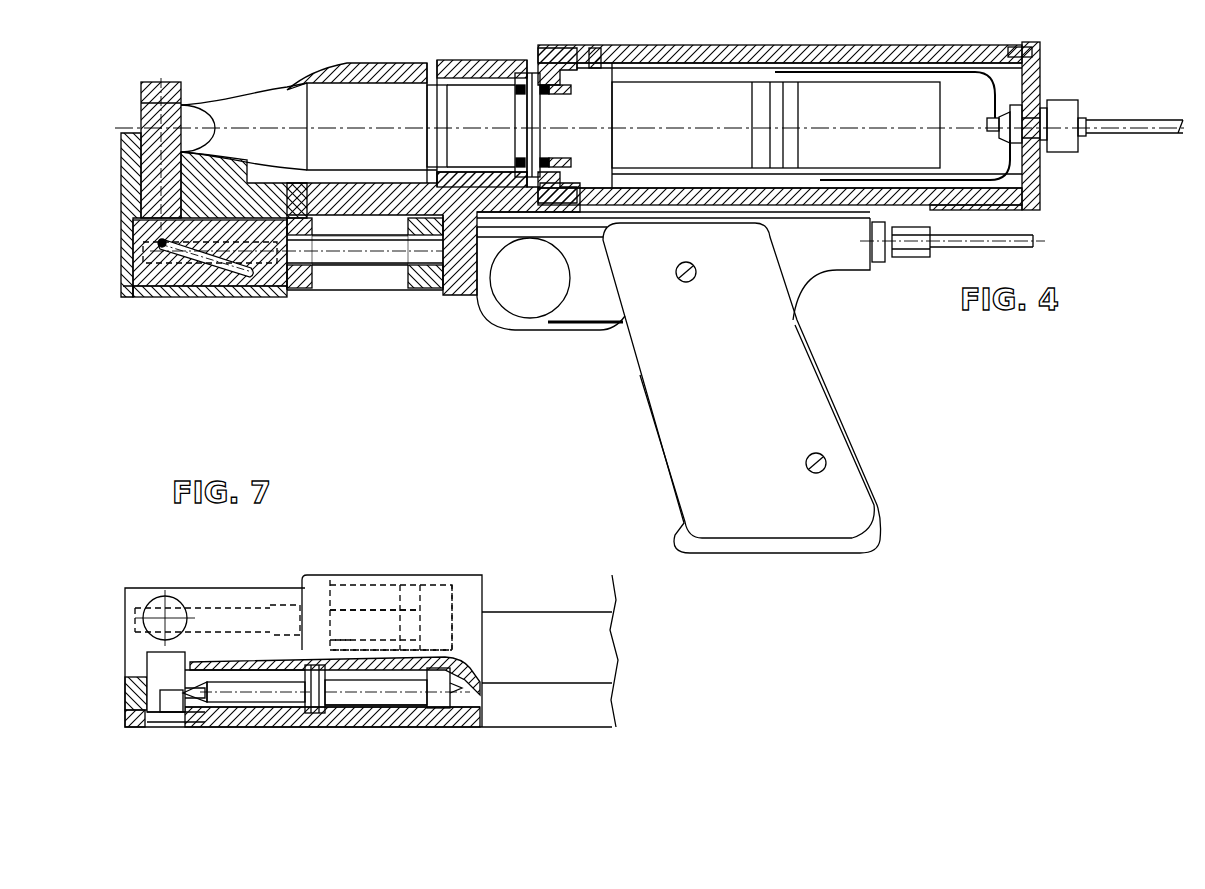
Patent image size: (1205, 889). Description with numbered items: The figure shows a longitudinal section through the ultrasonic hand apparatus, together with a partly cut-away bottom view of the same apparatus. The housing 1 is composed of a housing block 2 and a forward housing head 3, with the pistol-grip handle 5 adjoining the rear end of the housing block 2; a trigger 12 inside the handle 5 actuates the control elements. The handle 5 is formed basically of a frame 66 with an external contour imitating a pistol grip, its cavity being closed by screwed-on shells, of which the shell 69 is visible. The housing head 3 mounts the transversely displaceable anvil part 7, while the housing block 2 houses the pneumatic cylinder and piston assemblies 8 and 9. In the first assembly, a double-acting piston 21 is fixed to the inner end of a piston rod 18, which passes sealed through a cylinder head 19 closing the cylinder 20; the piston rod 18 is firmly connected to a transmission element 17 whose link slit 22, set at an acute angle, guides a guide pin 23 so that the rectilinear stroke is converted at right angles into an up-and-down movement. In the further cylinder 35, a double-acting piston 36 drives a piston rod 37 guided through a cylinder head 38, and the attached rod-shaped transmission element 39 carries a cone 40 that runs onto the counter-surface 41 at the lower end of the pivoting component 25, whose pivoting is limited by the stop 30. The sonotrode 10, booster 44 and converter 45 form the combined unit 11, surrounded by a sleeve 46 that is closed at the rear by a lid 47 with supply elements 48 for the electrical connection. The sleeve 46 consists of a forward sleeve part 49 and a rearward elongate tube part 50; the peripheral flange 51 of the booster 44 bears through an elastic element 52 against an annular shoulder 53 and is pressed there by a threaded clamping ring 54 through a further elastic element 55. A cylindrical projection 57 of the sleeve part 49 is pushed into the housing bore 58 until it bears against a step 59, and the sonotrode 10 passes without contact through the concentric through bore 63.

In FIG. 4, the housing 1 is at (372, 297).
In FIG. 7, the housing 1 is at (312, 572).
In FIG. 4, the housing block 2 is at (465, 300).
In FIG. 7, the housing block 2 is at (440, 575).
In FIG. 4, the housing head 3 is at (121, 199).
In FIG. 7, the housing head 3 is at (248, 588).
In FIG. 4, the handle 5 is at (838, 395).
In FIG. 4, the anvil part 7 is at (158, 82).
In FIG. 4, the pneumatic cylinder and piston assembly 8 is at (388, 282).
In FIG. 7, the pneumatic cylinder and piston assembly 8 is at (400, 570).
In FIG. 7, the pneumatic cylinder and piston assembly 9 is at (400, 708).
In FIG. 4, the sonotrode 10 is at (232, 106).
In FIG. 4, the combined unit 11 is at (682, 70).
In FIG. 4, the trigger 12 is at (575, 272).
In FIG. 4, the transmission element 17 is at (125, 276).
In FIG. 7, the transmission element 17 is at (176, 596).
In FIG. 4, the piston rod 18 is at (345, 248).
In FIG. 7, the piston rod 18 is at (400, 600).
In FIG. 4, the cylinder head 19 is at (305, 290).
In FIG. 7, the cylinder head 19 is at (340, 615).
In FIG. 4, the cylinder 20 is at (350, 285).
In FIG. 7, the cylinder 20 is at (350, 585).
In FIG. 4, the piston 21 is at (410, 233).
In FIG. 7, the piston 21 is at (420, 640).
In FIG. 4, the link slit 22 is at (212, 275).
In FIG. 4, the guide pin 23 is at (158, 243).
In FIG. 7, the pivoting component 25 is at (150, 664).
In FIG. 7, the stop 30 is at (172, 722).
In FIG. 7, the cylinder 35 is at (345, 710).
In FIG. 7, the piston 36 is at (440, 708).
In FIG. 7, the piston rod 37 is at (370, 702).
In FIG. 7, the cylinder head 38 is at (315, 713).
In FIG. 7, the transmission element 39 is at (258, 702).
In FIG. 7, the cone 40 is at (188, 680).
In FIG. 7, the counter-surface 41 is at (168, 690).
In FIG. 4, the booster 44 is at (474, 120).
In FIG. 4, the converter 45 is at (728, 114).
In FIG. 4, the sleeve 46 is at (708, 45).
In FIG. 4, the lid 47 is at (1040, 70).
In FIG. 4, the supply elements 48 is at (1075, 98).
In FIG. 4, the sleeve part 49 is at (560, 52).
In FIG. 4, the tube part 50 is at (832, 45).
In FIG. 4, the peripheral flange 51 is at (542, 143).
In FIG. 4, the elastic element 52 is at (516, 94).
In FIG. 4, the annular shoulder 53 is at (516, 160).
In FIG. 4, the clamping ring 54 is at (568, 94).
In FIG. 4, the elastic element 55 is at (546, 94).
In FIG. 4, the cylindrical projection 57 is at (480, 60).
In FIG. 4, the housing bore 58 is at (460, 60).
In FIG. 4, the step 59 is at (520, 205).
In FIG. 4, the through bore 63 is at (338, 62).
In FIG. 4, the frame 66 is at (607, 333).
In FIG. 7, the frame 66 is at (562, 660).
In FIG. 4, the shell 69 is at (728, 384).